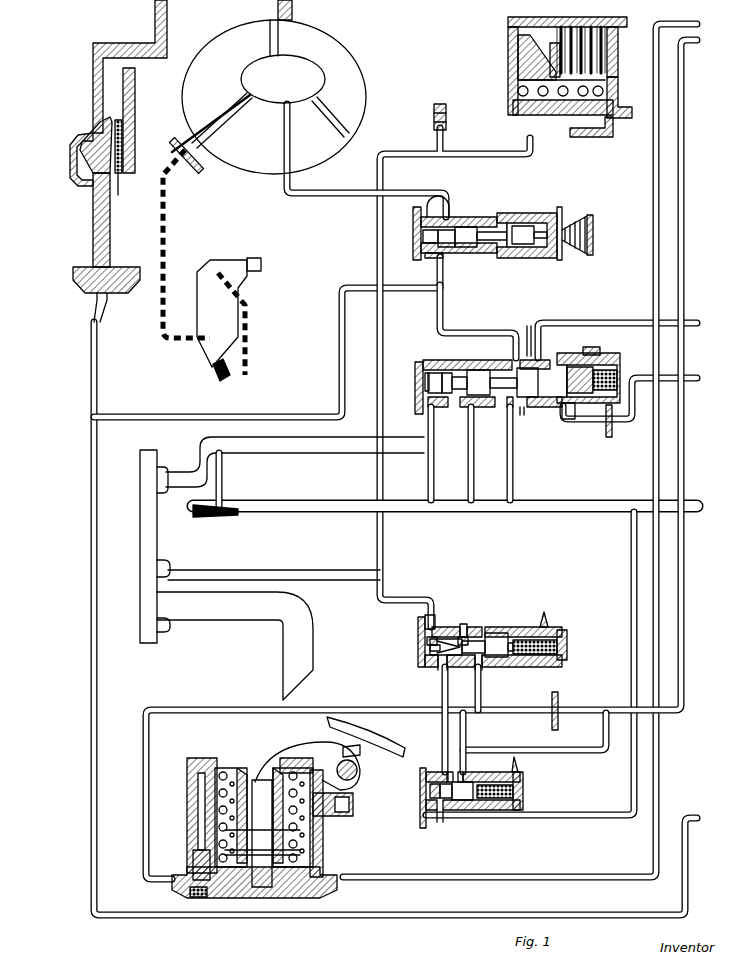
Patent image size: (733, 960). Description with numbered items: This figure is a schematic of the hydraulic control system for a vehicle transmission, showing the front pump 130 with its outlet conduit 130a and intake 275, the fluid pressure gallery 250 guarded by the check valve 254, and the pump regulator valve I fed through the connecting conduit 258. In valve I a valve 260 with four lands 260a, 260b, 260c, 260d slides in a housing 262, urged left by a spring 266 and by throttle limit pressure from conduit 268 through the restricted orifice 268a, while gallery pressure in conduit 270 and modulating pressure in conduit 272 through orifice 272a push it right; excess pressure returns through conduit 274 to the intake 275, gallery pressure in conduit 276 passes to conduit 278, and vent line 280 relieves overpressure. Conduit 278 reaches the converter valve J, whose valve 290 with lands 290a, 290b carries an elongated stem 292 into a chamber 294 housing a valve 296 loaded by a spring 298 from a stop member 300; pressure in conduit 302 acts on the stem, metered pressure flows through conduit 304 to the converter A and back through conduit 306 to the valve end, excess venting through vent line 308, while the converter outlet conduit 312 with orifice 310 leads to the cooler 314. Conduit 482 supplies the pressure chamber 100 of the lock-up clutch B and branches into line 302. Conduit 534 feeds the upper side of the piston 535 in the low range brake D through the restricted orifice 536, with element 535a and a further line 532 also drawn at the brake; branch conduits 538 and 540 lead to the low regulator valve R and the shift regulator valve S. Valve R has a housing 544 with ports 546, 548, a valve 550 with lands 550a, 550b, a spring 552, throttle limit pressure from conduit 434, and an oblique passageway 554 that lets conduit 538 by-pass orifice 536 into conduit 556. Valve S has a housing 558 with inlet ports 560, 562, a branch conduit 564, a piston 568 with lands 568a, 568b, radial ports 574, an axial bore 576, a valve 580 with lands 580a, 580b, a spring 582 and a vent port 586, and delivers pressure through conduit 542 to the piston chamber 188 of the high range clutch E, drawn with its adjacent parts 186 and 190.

The pressure chamber 100 is at (92, 190).
The front pump 130 is at (140, 545).
The bar extension 130a is at (223, 476).
The plate 186 is at (513, 105).
The piston chamber 188 is at (570, 130).
The rollers 190 is at (517, 92).
The fluid pressure gallery 250 is at (540, 513).
The front pump check valve 254 is at (235, 513).
The connecting conduit 258 is at (327, 455).
The valve 260 is at (448, 380).
The valve land 260a is at (443, 372).
The valve land 260b is at (480, 370).
The valve land 260c is at (535, 410).
The valve land 260d is at (564, 413).
The housing 262 is at (418, 364).
The spring 266 is at (592, 363).
The conduit 268 is at (565, 424).
The restricted orifice 268a is at (609, 438).
The conduit 270 is at (428, 462).
The conduit 272 is at (594, 323).
The restricted orifice 272a is at (529, 340).
The conduit 274 is at (468, 482).
The intake 275 is at (168, 566).
The conduit 276 is at (514, 487).
The conduit 278 is at (455, 333).
The vent line 280 is at (527, 402).
The valve 290 is at (446, 254).
The valve land 290a is at (430, 257).
The valve land 290b is at (452, 249).
The elongated valve stem 292 is at (468, 227).
The fluid pressure chamber 294 is at (505, 215).
The valve 296 is at (512, 226).
The spring 298 is at (578, 222).
The spring stop member 300 is at (594, 232).
The conduit 302 is at (278, 410).
The conduit 304 is at (442, 192).
The connecting conduit 306 is at (413, 210).
The vent line 308 is at (462, 217).
The restricted orifice 310 is at (197, 170).
The converter outlet conduit 312 is at (167, 229).
The cooler 314 is at (248, 258).
The conduit 434 is at (630, 527).
The conduit 482 is at (98, 388).
The conduit 532 is at (652, 545).
The conduit 534 is at (678, 562).
The piston 535 is at (312, 855).
The spring 535a is at (305, 830).
The restricted orifice 536 is at (558, 725).
The branch conduit 538 is at (441, 700).
The branch conduit 540 is at (481, 695).
The high clutch pressure conduit 542 is at (408, 150).
The cylindrical housing 544 is at (524, 805).
The radial port 546 is at (449, 772).
The radial port 548 is at (462, 772).
The valve 550 is at (421, 788).
The valve land 550a is at (428, 796).
The valve land 550b is at (481, 819).
The spring 552 is at (524, 790).
The fluid passageway 554 is at (441, 813).
The conduit 556 is at (467, 730).
The cylindrical housing 558 is at (553, 628).
The pressure inlet port 560 is at (441, 672).
The pressure inlet port 562 is at (478, 672).
The branch conduit 564 is at (425, 612).
The piston 568 is at (420, 665).
The piston land 568a is at (425, 636).
The piston land 568b is at (463, 625).
The radial ports 574 is at (446, 647).
The axial bore 576 is at (428, 652).
The valve 580 is at (563, 650).
The valve land 580a is at (484, 627).
The valve land 580b is at (500, 633).
The spring 582 is at (564, 640).
The vent port 586 is at (462, 637).
The converter A is at (355, 45).
The converter lock-up clutch B is at (92, 128).
The low range brake D is at (277, 807).
The high range clutch E is at (543, 77).
The pump regulator valve I is at (512, 411).
The converter valve J is at (506, 229).
The low regulator valve R is at (472, 803).
The shift regulator valve S is at (484, 641).